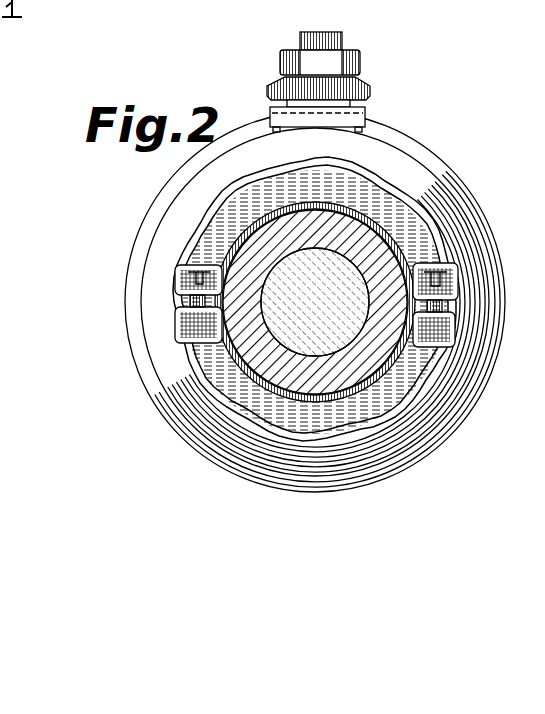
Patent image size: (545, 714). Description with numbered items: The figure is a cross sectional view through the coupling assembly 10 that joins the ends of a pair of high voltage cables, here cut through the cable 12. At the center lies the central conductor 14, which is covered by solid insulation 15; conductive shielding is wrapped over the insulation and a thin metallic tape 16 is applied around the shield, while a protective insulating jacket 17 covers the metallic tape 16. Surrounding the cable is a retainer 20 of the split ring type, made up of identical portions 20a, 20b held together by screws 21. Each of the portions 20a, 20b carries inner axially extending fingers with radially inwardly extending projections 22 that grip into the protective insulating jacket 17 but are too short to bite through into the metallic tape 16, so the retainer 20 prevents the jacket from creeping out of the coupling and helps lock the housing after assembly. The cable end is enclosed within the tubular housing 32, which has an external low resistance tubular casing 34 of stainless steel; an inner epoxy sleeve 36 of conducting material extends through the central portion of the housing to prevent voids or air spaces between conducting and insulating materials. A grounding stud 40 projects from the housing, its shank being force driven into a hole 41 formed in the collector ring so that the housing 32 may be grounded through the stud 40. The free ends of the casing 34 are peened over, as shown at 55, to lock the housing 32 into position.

The coupling assembly 10 is at (136, 501).
The high voltage cable 12 is at (275, 212).
The central conductor 14 is at (352, 368).
The solid insulation 15 is at (337, 337).
The metallic tape 16 is at (358, 218).
The protective insulating jacket 17 is at (328, 208).
The retainer 20 is at (398, 184).
The retainer portion 20a is at (225, 213).
The retainer portion 20b is at (195, 430).
The screws 21 is at (180, 281).
The radially inwardly extending projections 22 is at (440, 240).
The tubular housing 32 is at (503, 348).
The tubular casing 34 is at (175, 303).
The inner epoxy sleeve 36 is at (529, 12).
The grounding studs 40 is at (300, 40).
The hole 41 is at (489, 8).
The peened over casing ends 55 is at (318, 166).